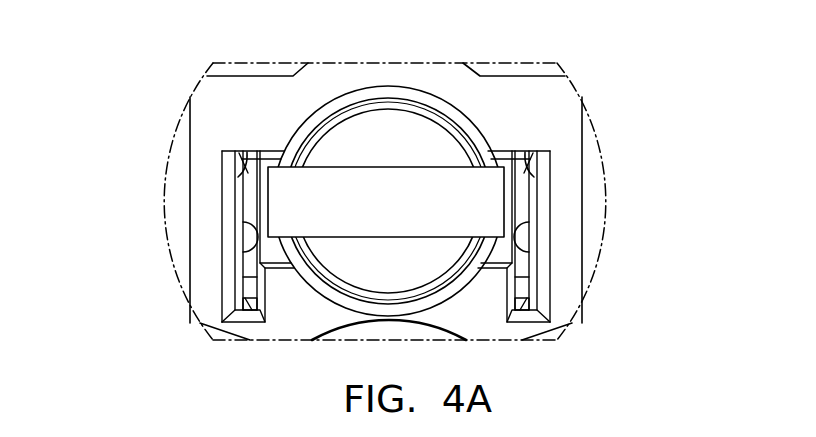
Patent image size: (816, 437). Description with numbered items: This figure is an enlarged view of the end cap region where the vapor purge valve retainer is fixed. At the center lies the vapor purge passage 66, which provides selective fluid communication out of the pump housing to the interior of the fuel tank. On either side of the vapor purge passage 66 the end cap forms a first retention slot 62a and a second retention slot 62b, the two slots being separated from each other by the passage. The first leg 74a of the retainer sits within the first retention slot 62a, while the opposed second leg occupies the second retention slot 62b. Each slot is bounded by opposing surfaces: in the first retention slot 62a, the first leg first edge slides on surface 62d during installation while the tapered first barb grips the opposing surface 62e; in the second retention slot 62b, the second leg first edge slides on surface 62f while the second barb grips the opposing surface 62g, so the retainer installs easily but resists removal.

The vapor purge passage 66 is at (448, 277).
The first leg 74a is at (462, 175).
The first retention slot 62a is at (252, 251).
The second retention slot 62b is at (521, 252).
The surface of first retention slot 62d is at (240, 176).
The surface of first retention slot 62e is at (250, 298).
The surface of second retention slot 62f is at (534, 177).
The lower foot of right bracket 62g is at (524, 298).